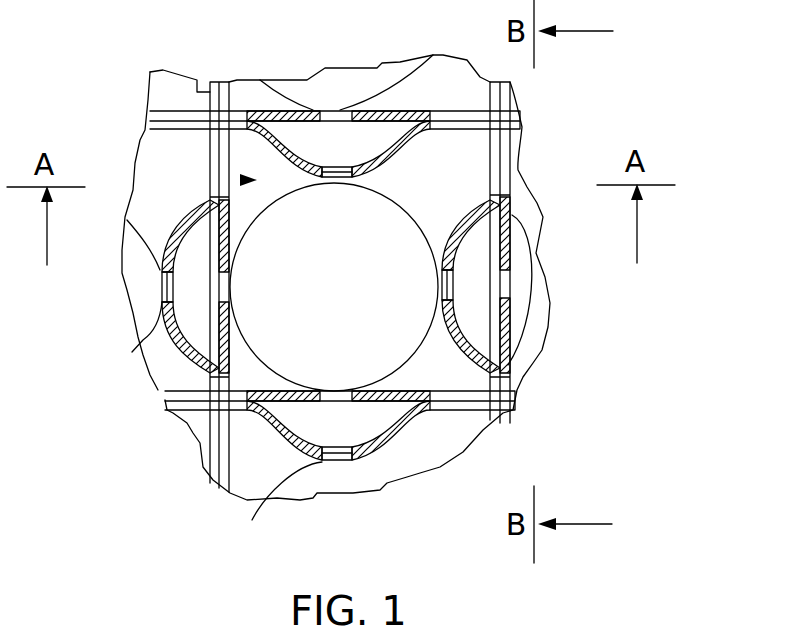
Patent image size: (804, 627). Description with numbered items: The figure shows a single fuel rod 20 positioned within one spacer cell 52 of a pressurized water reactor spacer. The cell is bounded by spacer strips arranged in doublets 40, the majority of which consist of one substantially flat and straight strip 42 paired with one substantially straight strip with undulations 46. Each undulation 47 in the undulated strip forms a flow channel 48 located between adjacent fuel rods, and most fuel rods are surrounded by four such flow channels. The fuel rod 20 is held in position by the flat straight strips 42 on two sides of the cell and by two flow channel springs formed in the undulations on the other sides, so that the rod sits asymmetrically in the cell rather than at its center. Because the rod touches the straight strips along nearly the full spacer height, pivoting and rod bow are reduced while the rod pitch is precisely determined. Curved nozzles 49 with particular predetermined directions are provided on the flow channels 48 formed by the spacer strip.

The fuel rod 20 is at (314, 291).
The doublet 40 is at (517, 195).
The flat straight strip 42 is at (517, 162).
The strip with undulations 46 is at (500, 157).
The undulation 47 is at (477, 362).
The flow channel 48 is at (295, 137).
The curved nozzle 49 is at (45, 617).
The spacer cell 52 is at (243, 180).